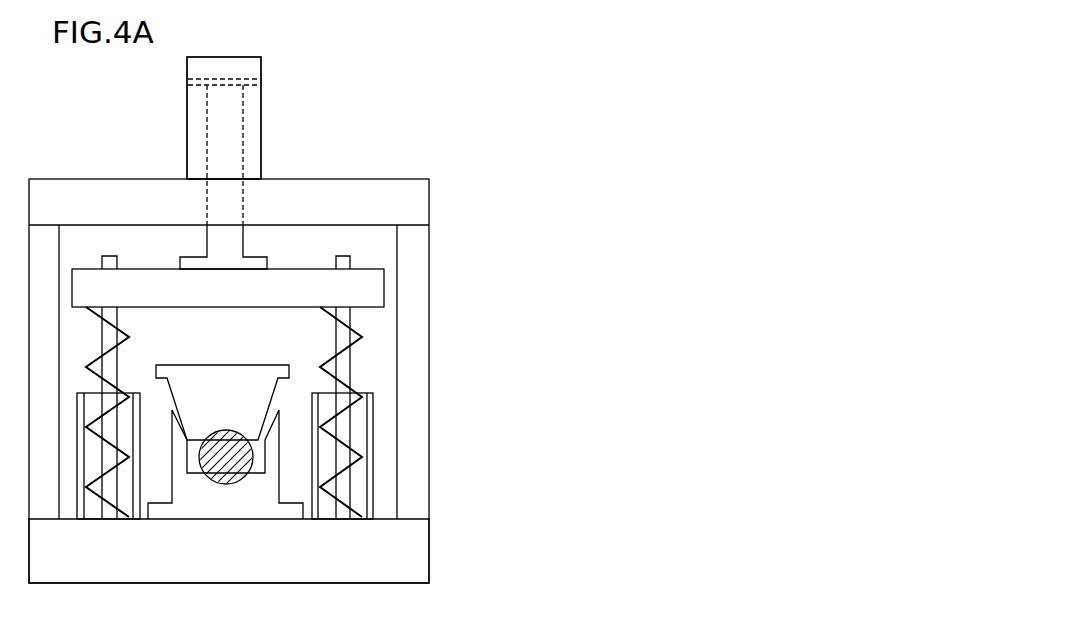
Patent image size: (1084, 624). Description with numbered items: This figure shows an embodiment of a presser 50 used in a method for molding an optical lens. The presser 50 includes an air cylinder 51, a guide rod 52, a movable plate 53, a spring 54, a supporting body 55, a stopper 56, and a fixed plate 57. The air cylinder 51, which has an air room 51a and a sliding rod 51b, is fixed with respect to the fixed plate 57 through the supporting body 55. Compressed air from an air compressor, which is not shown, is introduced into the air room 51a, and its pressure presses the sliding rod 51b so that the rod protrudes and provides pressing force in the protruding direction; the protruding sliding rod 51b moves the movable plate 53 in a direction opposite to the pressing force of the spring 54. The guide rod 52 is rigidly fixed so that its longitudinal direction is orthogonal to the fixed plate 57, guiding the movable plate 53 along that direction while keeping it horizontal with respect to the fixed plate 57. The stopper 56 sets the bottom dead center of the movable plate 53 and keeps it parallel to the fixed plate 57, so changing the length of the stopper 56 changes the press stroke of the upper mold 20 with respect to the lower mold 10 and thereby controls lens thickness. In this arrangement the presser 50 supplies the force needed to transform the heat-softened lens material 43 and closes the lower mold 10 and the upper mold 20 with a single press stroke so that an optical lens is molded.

The presser 50 is at (331, 68).
The air cylinder 51 is at (600, 73).
The air room 51a is at (261, 118).
The sliding rod 51b is at (243, 238).
The guide rod 52 is at (352, 257).
The movable plate 53 is at (384, 288).
The spring 54 is at (363, 337).
The supporting body 55 is at (429, 372).
The stopper 56 is at (377, 453).
The fixed plate 57 is at (429, 553).
The upper mold 20 is at (205, 385).
The lower mold 10 is at (245, 498).
The heat-softened lens material 43 is at (220, 462).